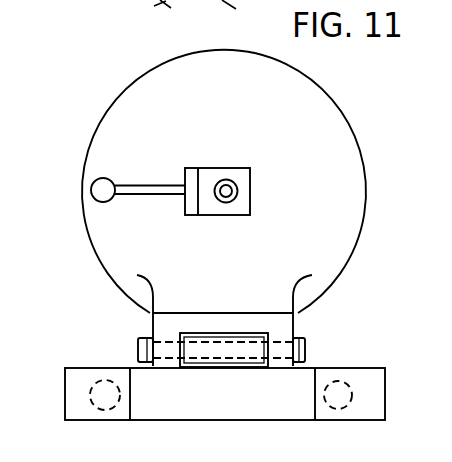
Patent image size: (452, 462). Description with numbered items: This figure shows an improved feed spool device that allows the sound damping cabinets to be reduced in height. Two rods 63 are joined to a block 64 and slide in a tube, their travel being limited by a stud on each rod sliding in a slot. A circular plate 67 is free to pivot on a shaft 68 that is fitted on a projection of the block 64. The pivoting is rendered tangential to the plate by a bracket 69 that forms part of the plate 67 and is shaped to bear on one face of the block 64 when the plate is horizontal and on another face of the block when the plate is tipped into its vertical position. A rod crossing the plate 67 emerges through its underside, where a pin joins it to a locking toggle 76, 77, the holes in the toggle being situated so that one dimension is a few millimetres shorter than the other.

The rod 63 is at (338, 381).
The block 64 is at (378, 395).
The circular plate 67 is at (340, 110).
The shaft 68 is at (283, 343).
The bracket 69 is at (152, 327).
The locking toggle 76 is at (221, 168).
The locking toggle 77 is at (145, 190).